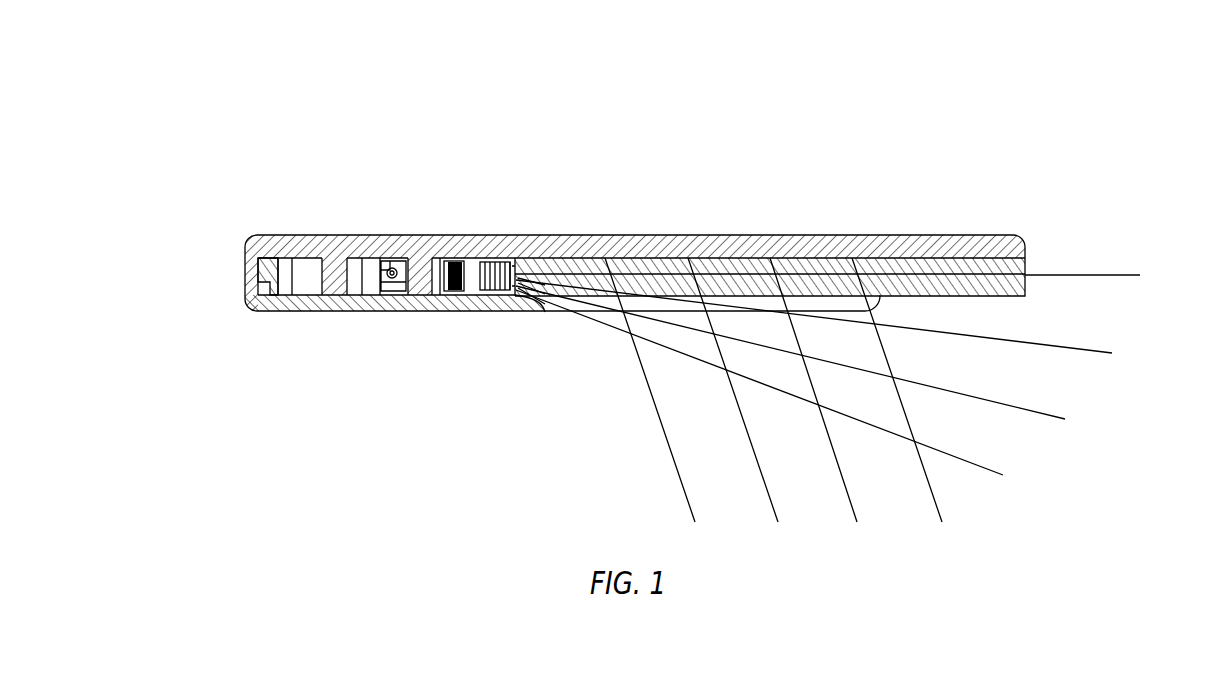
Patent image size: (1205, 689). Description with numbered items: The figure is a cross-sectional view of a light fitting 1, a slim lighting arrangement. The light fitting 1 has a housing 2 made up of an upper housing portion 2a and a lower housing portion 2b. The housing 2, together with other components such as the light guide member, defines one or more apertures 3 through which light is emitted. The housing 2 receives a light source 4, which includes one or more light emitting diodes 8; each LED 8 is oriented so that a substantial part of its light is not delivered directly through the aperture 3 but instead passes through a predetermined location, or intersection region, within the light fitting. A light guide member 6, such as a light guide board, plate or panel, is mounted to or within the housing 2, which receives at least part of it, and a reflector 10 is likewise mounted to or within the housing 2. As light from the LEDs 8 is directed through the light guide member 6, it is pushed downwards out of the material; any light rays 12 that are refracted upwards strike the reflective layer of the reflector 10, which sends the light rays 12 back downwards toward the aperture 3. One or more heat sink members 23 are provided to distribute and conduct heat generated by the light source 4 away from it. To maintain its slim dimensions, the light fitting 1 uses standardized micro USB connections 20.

The light fitting 1 is at (230, 179).
The housing 2 is at (575, 241).
The upper housing portion 2a is at (648, 235).
The lower housing portion 2b is at (307, 312).
The aperture 3 is at (1024, 281).
The light source 4 is at (493, 258).
The light guide member 6 is at (908, 285).
The light emitting diode 8 is at (497, 258).
The reflector 10 is at (808, 258).
The light rays 12 is at (1108, 275).
The micro USB connection 20 is at (395, 258).
The heat sink member 23 is at (453, 295).